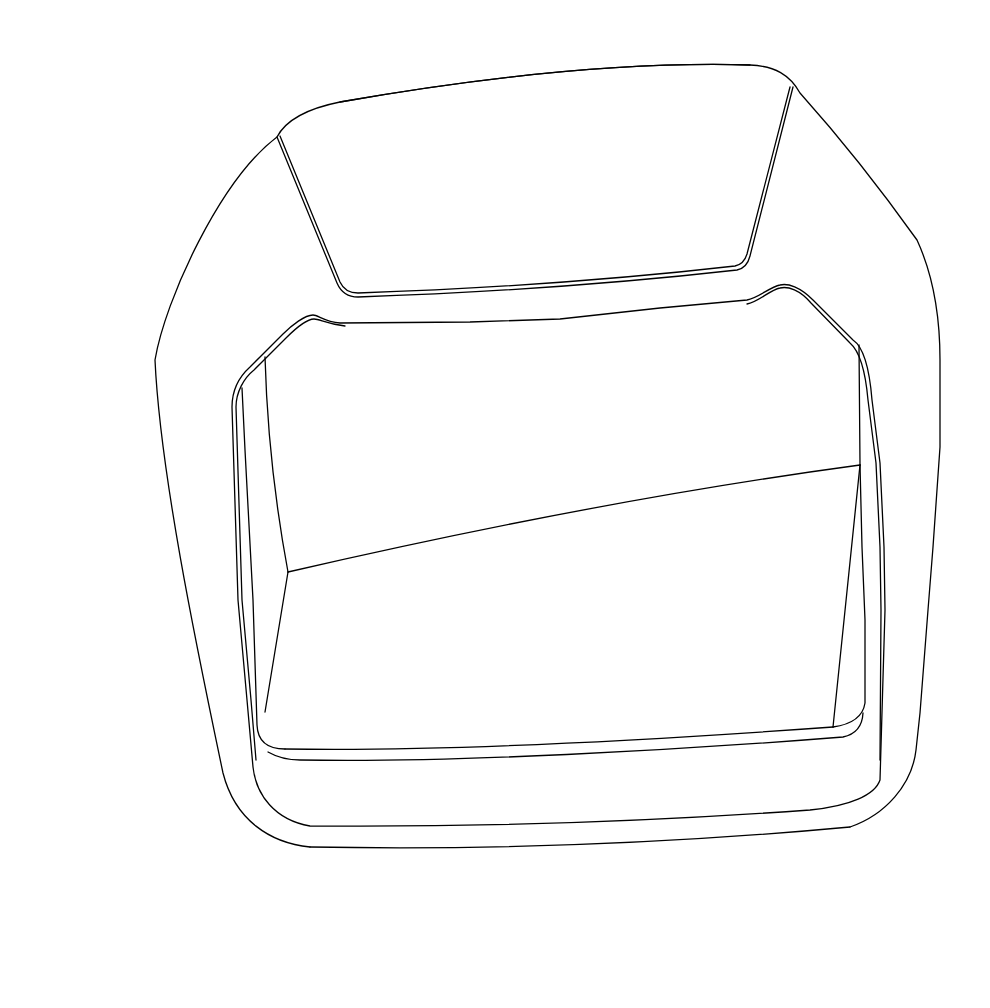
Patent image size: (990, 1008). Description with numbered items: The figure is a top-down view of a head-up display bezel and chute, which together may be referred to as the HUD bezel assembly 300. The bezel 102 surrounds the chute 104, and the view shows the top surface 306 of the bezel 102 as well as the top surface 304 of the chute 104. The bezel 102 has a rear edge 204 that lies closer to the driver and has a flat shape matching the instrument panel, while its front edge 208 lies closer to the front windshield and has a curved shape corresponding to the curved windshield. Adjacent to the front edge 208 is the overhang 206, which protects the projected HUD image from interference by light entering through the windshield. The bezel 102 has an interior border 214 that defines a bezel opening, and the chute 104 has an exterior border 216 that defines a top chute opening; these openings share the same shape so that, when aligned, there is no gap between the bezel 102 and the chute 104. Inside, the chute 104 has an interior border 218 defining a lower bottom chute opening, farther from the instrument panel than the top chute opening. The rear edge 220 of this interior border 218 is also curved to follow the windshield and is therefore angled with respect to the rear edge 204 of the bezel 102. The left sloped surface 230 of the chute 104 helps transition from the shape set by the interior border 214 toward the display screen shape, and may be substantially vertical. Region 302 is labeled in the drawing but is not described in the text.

The HUD bezel assembly 300 is at (160, 121).
The bezel 102 is at (903, 247).
The chute 104 is at (287, 653).
The rear edge 204 is at (753, 835).
The overhang 206 is at (727, 167).
The front edge 208 is at (673, 62).
The interior border 214 is at (750, 715).
The exterior border 216 is at (516, 772).
The interior border 218 is at (353, 572).
The rear edge 220 is at (747, 482).
The left sloped surface 230 is at (268, 505).
The side region 302 is at (820, 632).
The top surface 304 is at (421, 718).
The top surface 306 is at (196, 580).